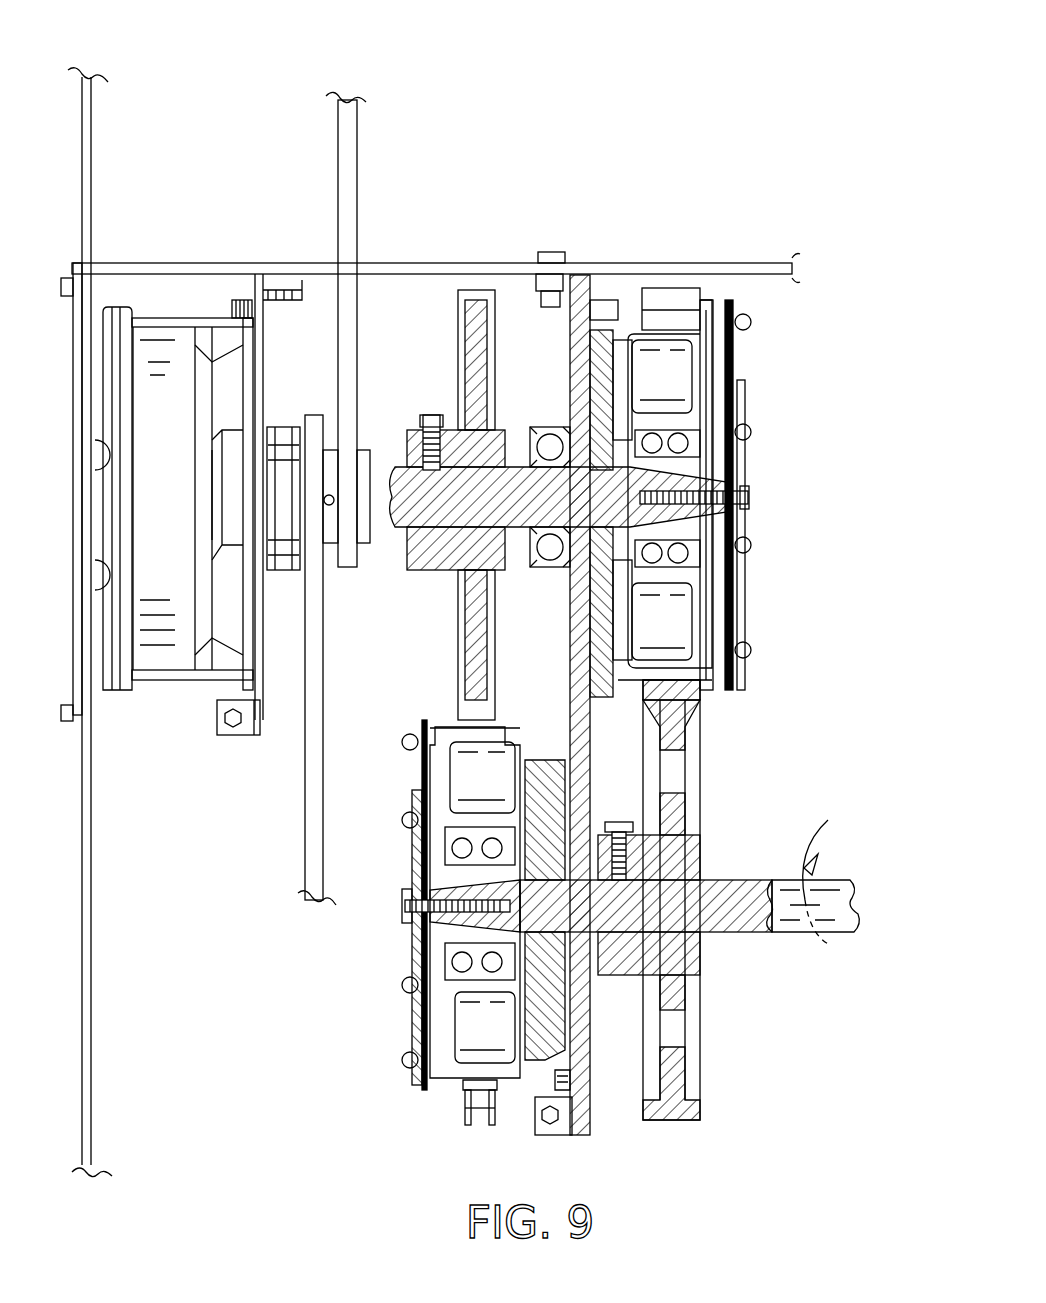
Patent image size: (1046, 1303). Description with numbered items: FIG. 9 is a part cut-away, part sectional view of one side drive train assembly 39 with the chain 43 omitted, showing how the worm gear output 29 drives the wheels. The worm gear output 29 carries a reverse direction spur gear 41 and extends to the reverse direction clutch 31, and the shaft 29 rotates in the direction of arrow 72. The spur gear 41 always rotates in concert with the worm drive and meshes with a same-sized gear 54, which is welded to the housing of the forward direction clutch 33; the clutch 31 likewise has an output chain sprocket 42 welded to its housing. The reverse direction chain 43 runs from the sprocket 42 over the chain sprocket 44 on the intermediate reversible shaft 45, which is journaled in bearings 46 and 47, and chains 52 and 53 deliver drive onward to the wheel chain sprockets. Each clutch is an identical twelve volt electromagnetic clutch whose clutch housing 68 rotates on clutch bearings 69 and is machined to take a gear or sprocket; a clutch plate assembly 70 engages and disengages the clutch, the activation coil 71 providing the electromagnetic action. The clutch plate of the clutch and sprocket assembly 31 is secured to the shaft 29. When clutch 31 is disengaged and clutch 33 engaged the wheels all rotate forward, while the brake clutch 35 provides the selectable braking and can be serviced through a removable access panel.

The worm gear output 29 is at (725, 900).
The reverse direction right side clutch 31 is at (380, 1060).
The forward direction right side clutch 33 is at (780, 408).
The right side brake clutch 35 is at (158, 300).
The right side assembly 39 is at (650, 124).
The reverse direction spur gear 41 is at (705, 1025).
The output chain sprocket 42 is at (480, 1097).
The reverse direction chain 43 is at (466, 1126).
The chain sprocket 44 is at (475, 290).
The intermediate reversible shaft 45 is at (512, 485).
The bearing 46 is at (548, 430).
The bearing 47 is at (272, 432).
The chain 52 is at (312, 855).
The chain 53 is at (345, 160).
The gear 54 is at (700, 297).
The clutch housing 68 is at (715, 702).
The clutch bearings 69 is at (700, 466).
The clutch plate assembly 70 is at (748, 566).
The activation coil 71 is at (675, 618).
The arrow 72 is at (830, 872).